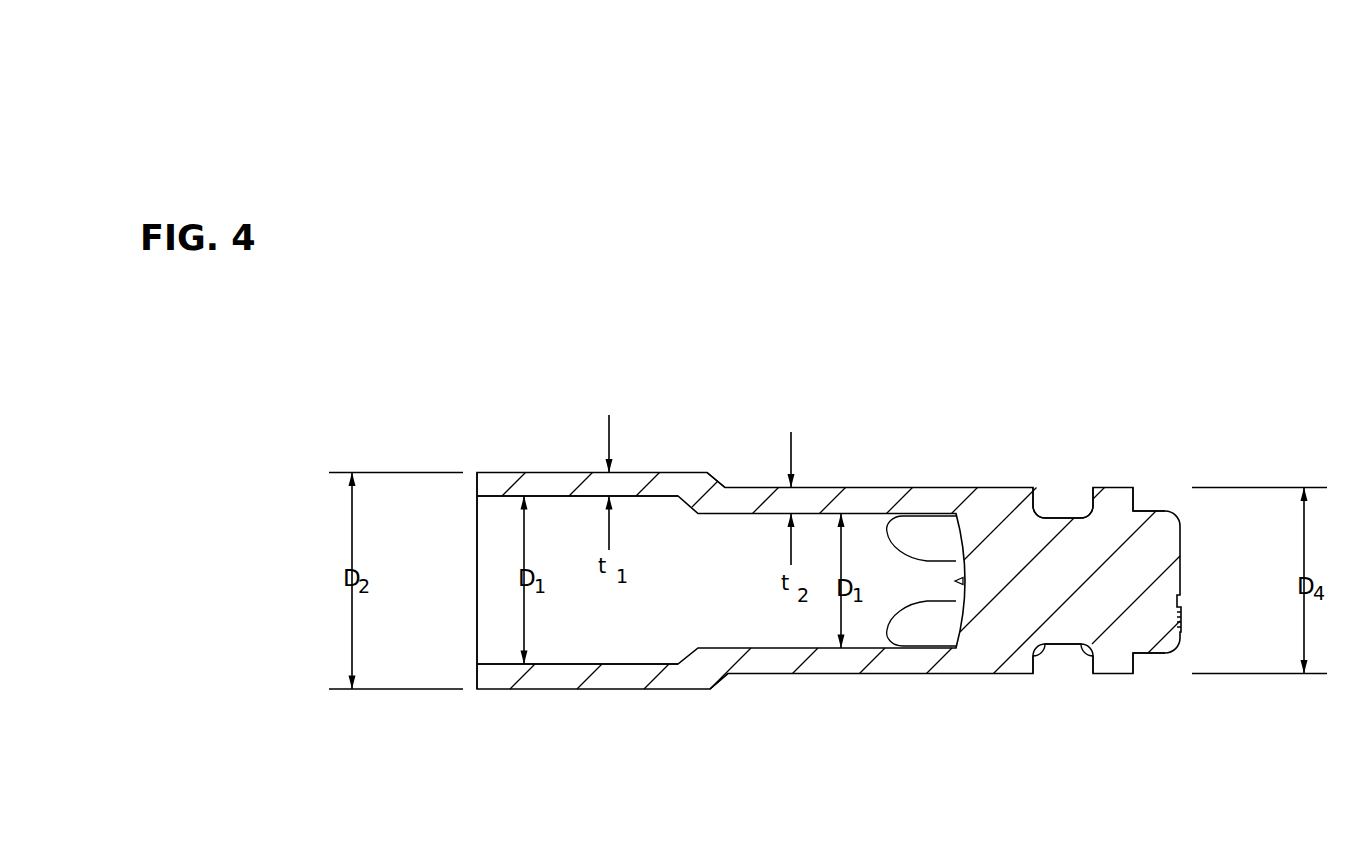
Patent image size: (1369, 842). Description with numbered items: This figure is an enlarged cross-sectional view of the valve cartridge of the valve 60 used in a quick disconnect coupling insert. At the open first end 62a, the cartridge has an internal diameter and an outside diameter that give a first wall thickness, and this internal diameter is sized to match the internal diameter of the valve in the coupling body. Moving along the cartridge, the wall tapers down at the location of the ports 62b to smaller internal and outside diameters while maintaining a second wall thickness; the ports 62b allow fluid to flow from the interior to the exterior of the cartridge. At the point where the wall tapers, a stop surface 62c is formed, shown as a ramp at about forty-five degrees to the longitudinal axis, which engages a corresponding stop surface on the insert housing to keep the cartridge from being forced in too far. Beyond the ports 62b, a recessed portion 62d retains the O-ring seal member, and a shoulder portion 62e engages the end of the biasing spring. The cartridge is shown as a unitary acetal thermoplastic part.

The valve 60 is at (485, 412).
The open first end 62a is at (477, 670).
The ports 62b is at (922, 528).
The stop surface 62c is at (710, 473).
The recessed portion 62d is at (1065, 517).
The shoulder portion 62e is at (1132, 660).